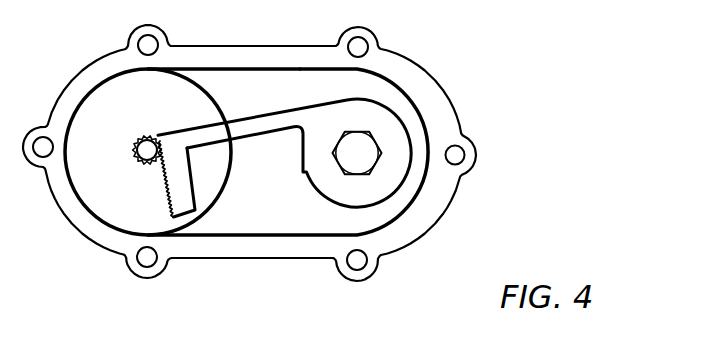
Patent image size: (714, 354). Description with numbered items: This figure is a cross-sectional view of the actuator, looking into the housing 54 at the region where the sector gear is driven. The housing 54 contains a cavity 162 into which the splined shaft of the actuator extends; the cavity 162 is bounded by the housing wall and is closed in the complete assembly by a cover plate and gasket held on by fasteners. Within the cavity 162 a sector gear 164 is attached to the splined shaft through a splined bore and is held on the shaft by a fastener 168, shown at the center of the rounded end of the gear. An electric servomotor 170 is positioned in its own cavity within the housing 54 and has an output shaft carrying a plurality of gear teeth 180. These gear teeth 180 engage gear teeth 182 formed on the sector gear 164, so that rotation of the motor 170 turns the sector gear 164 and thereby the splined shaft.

The housing 54 is at (89, 238).
The cavity 162 is at (228, 78).
The sector gear 164 is at (290, 97).
The fastener 168 is at (370, 132).
The electric servomotor 170 is at (107, 78).
The gear teeth 180 is at (142, 136).
The gear teeth 182 is at (163, 183).